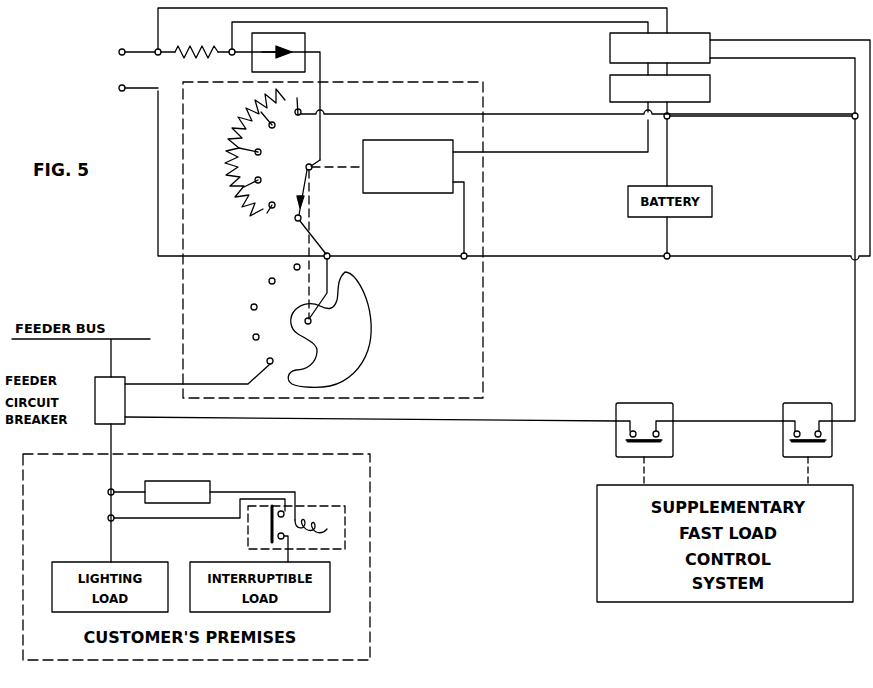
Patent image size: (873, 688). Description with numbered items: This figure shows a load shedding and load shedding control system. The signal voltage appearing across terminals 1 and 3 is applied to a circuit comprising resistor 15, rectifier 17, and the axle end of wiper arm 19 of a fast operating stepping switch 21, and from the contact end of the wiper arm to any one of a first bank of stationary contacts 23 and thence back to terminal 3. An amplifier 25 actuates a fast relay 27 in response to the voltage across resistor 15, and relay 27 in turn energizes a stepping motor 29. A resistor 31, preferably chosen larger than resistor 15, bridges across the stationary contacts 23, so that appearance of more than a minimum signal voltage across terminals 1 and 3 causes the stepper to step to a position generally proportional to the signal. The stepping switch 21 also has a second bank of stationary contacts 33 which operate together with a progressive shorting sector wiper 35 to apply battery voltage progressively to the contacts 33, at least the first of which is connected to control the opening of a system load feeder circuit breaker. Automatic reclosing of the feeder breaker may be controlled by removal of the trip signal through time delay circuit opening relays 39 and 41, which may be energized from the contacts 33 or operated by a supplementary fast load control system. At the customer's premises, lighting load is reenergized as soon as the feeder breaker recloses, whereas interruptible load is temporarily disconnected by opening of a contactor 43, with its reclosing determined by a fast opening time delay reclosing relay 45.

The terminal 1 is at (130, 53).
The terminal 3 is at (128, 89).
The resistor 15 is at (200, 47).
The rectifier 17 is at (305, 42).
The wiper arm 19 is at (306, 196).
The fast operating stepping switch 21 is at (483, 347).
The first bank of stationary contacts 23 is at (261, 179).
The amplifier 25 is at (610, 50).
The fast relay 27 is at (610, 88).
The stepping motor 29 is at (395, 194).
The resistor 31 is at (250, 208).
The second bank of stationary contacts 33 is at (253, 338).
The progressive shorting sector wiper 35 is at (373, 318).
The time delay circuit opening relay 39 is at (638, 403).
The time delay circuit opening relay 41 is at (806, 403).
The contactor 43 is at (345, 528).
The fast opening time delay reclosing relay 45 is at (196, 481).